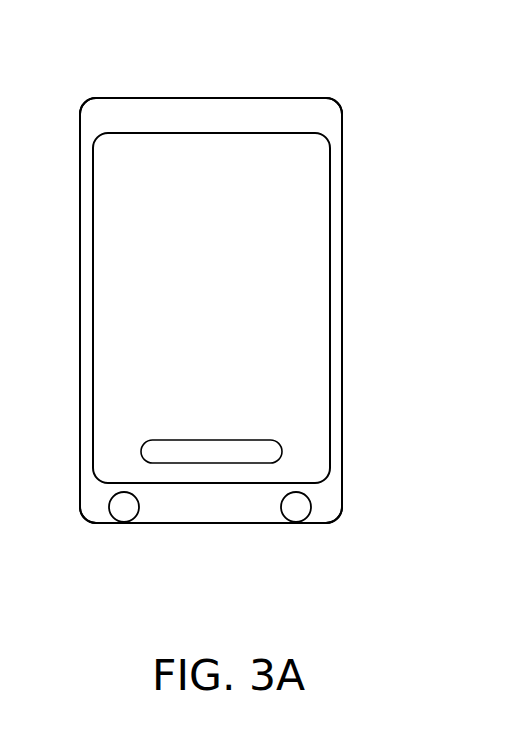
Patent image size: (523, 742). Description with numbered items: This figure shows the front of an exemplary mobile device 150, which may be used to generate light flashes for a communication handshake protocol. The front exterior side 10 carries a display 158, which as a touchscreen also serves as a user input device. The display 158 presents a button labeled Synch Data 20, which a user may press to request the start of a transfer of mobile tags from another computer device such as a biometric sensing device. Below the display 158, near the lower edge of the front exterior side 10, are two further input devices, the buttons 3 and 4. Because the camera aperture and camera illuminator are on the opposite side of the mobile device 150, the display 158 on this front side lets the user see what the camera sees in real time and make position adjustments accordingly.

The mobile device 150 is at (257, 84).
The front exterior side 10 is at (343, 187).
The display 158 is at (298, 238).
The synch data button 20 is at (278, 443).
The button 3 is at (115, 505).
The button 4 is at (290, 502).